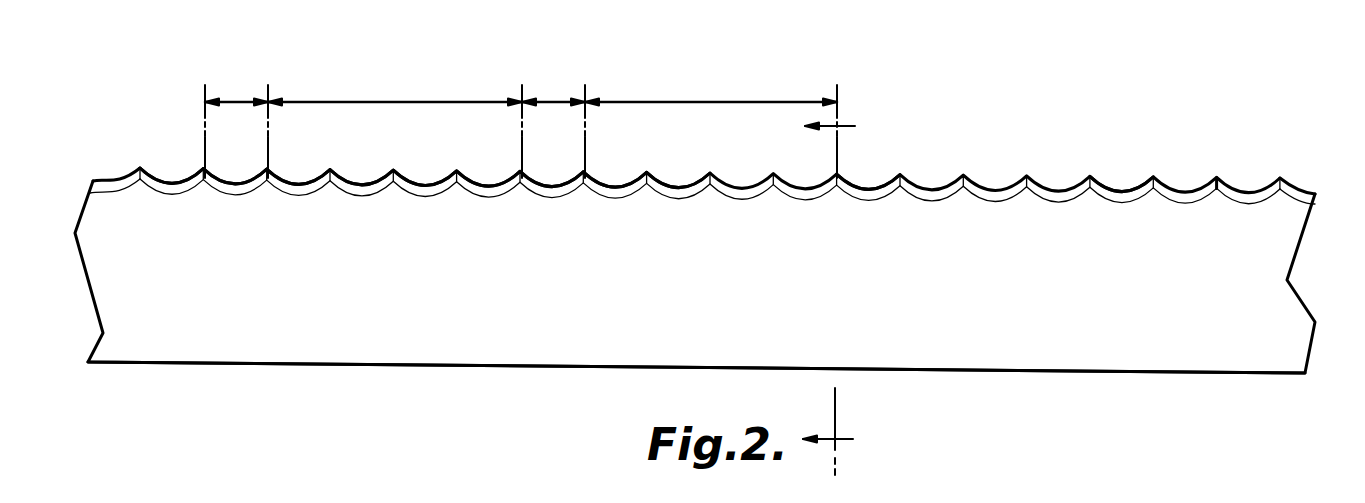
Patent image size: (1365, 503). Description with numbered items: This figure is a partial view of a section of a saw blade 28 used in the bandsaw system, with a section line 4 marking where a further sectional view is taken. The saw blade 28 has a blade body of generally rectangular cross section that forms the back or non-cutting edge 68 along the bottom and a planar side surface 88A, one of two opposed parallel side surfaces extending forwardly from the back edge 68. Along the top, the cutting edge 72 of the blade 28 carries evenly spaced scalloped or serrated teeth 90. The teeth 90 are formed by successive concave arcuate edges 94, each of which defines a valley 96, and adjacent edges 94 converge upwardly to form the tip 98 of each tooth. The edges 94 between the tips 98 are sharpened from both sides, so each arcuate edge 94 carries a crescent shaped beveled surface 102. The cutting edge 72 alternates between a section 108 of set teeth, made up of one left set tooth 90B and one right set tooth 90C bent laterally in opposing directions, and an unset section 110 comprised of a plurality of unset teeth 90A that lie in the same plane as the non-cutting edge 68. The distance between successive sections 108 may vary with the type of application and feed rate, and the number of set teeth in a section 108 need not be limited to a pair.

The saw blade 28 is at (712, 264).
The cutting edge 72 is at (1298, 172).
The side surface 88A is at (185, 302).
The back edge 68 is at (1010, 373).
The teeth 90 is at (975, 141).
The unset teeth 90A is at (141, 169).
The left set tooth 90B is at (272, 170).
The right set tooth 90C is at (204, 169).
The concave arcuate edge 94 is at (1117, 193).
The valley 96 is at (868, 184).
The tip 98 is at (1216, 177).
The beveled surface 102 is at (1053, 197).
The section of set teeth 108 is at (238, 98).
The unset section 110 is at (392, 98).
The section line 4- 4 is at (836, 287).